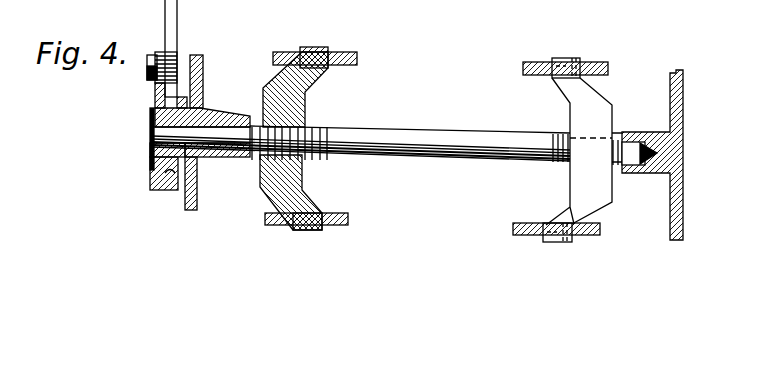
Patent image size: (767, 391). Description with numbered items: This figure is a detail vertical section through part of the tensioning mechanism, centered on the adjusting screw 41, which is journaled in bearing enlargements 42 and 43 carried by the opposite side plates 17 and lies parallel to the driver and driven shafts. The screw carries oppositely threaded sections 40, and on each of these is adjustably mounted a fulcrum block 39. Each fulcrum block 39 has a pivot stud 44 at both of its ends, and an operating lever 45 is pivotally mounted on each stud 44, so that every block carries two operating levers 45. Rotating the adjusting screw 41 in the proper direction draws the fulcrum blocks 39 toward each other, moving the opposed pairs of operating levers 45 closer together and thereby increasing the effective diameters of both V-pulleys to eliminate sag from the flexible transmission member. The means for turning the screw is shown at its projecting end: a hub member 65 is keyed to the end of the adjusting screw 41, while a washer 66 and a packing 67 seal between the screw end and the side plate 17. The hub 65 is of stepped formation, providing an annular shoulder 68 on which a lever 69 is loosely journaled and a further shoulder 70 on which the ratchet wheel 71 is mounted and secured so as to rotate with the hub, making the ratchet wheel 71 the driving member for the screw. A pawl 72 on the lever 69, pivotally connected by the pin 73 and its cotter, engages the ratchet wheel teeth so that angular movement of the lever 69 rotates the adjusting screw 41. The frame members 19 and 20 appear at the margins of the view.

The side plate 17 is at (201, 58).
The frame member 19 is at (608, 0).
The frame member 20 is at (430, 0).
The fulcrum block 39 is at (306, 104).
The oppositely threaded section 40 is at (305, 156).
The adjusting screw 41 is at (426, 131).
The bearing enlargement 42 is at (638, 131).
The bearing enlargement 43 is at (248, 112).
The pivot stud 44 is at (320, 47).
The operating lever 45 is at (357, 58).
The hub member 65 is at (154, 112).
The washer 66 is at (203, 106).
The packing 67 is at (205, 158).
The annular shoulder 68 is at (172, 172).
The lever 69 is at (178, 13).
The shoulder 70 is at (152, 150).
The ratchet wheel 71 is at (152, 182).
The pawl 72 is at (170, 54).
The pin 73 is at (150, 56).